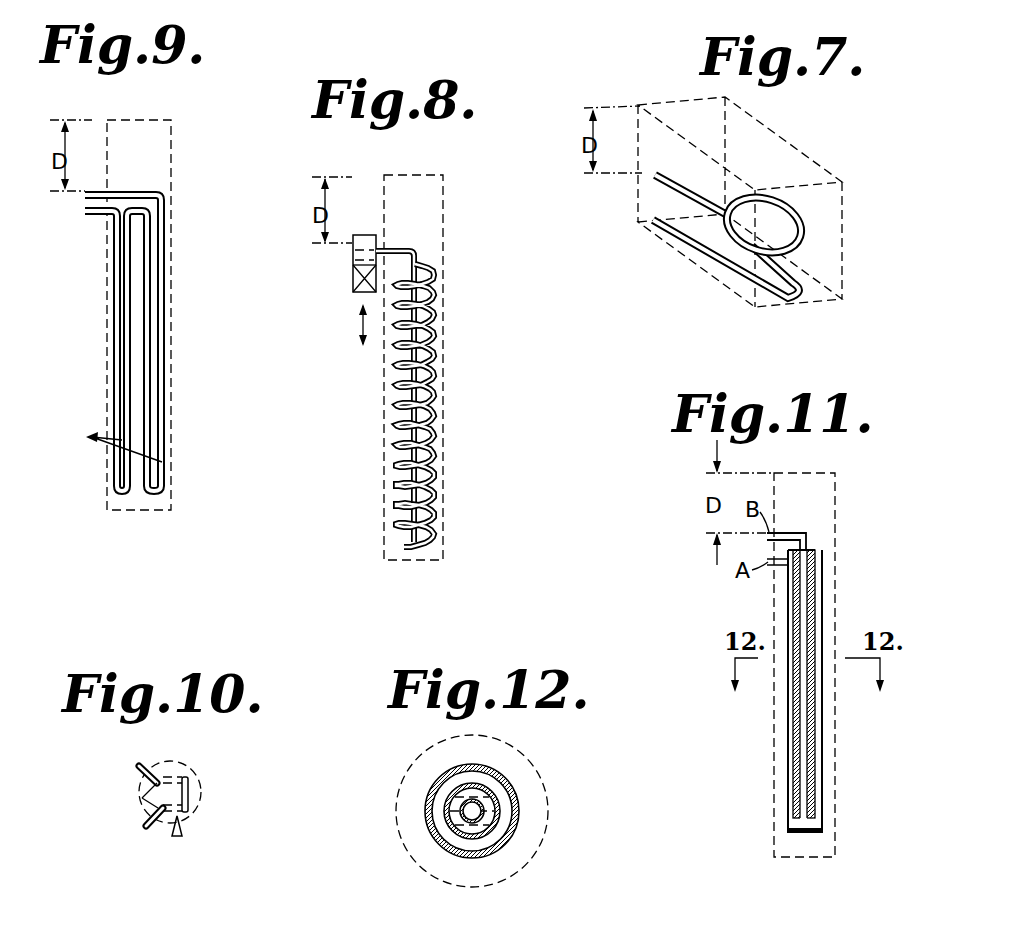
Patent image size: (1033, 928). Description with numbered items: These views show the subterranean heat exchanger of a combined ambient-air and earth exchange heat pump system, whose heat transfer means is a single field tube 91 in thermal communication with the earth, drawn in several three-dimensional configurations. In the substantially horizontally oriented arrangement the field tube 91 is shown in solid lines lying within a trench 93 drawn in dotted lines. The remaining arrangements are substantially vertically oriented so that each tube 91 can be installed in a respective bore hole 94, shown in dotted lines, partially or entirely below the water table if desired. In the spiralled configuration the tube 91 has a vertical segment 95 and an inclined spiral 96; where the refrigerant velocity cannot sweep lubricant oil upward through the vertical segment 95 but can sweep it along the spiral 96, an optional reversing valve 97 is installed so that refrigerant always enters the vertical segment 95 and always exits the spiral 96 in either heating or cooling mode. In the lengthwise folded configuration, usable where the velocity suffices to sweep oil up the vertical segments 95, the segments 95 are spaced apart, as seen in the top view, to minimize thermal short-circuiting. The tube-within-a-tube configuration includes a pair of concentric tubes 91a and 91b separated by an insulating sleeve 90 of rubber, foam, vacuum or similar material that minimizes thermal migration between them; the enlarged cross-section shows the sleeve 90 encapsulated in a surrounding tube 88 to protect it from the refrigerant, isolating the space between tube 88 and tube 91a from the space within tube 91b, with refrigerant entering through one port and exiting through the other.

In FIG. 12, the surrounding tube 88 is at (494, 830).
In FIG. 11, the insulating sleeve 90 is at (797, 812).
In FIG. 12, the insulating sleeve 90 is at (476, 790).
In FIG. 9, the field tube 91 is at (166, 281).
In FIG. 8, the field tube 91 is at (436, 322).
In FIG. 7, the field tube 91 is at (696, 252).
In FIG. 10, the field tube 91 is at (190, 794).
In FIG. 11, the outer concentric tube 91a is at (822, 572).
In FIG. 12, the outer concentric tube 91a is at (434, 786).
In FIG. 11, the inner concentric tube 91b is at (806, 630).
In FIG. 12, the inner concentric tube 91b is at (452, 828).
In FIG. 7, the trench 93 is at (812, 308).
In FIG. 9, the bore hole 94 is at (107, 334).
In FIG. 8, the bore hole 94 is at (443, 394).
In FIG. 11, the bore hole 94 is at (774, 594).
In FIG. 10, the bore hole 94 is at (183, 767).
In FIG. 12, the bore hole 94 is at (545, 792).
In FIG. 9, the vertical segment 95 is at (109, 444).
In FIG. 8, the vertical segment 95 is at (397, 390).
In FIG. 11, the vertical segment 95 is at (805, 703).
In FIG. 10, the vertical segment 95 is at (180, 786).
In FIG. 8, the spiral 96 is at (436, 432).
In FIG. 8, the reversing valve 97 is at (354, 292).